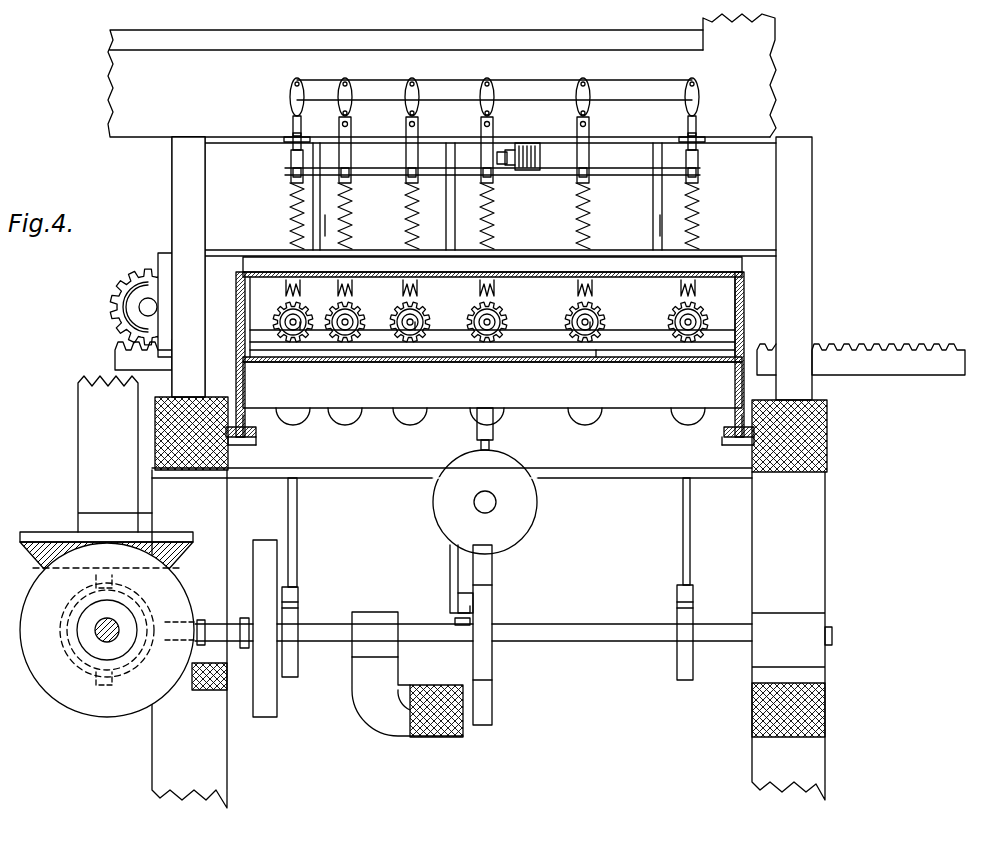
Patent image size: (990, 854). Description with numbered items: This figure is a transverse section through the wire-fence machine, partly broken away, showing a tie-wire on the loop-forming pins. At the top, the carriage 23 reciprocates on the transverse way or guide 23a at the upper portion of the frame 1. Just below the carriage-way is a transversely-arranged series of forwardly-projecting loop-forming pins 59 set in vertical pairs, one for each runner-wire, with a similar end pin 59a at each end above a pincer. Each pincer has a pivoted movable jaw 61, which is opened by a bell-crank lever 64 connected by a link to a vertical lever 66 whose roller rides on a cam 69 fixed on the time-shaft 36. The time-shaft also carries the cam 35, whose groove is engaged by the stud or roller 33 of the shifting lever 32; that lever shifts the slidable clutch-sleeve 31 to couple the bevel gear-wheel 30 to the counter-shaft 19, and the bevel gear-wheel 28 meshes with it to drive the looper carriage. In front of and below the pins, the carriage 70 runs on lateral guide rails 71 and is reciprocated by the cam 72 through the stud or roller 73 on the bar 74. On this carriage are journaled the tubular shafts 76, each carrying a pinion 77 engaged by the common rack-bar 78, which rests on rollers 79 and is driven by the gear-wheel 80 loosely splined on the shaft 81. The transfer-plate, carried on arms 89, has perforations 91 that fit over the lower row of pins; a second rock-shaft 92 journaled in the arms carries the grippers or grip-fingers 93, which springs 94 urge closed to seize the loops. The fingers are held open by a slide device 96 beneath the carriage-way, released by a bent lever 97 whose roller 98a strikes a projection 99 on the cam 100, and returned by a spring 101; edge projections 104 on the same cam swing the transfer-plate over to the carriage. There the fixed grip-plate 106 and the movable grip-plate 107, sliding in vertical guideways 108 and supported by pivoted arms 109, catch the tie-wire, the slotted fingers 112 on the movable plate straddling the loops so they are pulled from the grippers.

The frame 1 is at (196, 758).
The counter-shaft 19 is at (100, 636).
The carriage 23 is at (739, 75).
The transverse way or guide 23a is at (439, 83).
The bevel gear-wheel 28 is at (180, 540).
The bevel gear-wheel 30 is at (107, 630).
The slidable clutch-sleeve 31 is at (80, 672).
The shifting lever 32 is at (112, 686).
The stud or roller 33 is at (244, 650).
The cam 35 is at (278, 565).
The time-shaft 36 is at (568, 640).
The loop-forming pins 59 is at (410, 112).
The end pin 59a is at (710, 74).
The pivoted movable jaw 61 is at (688, 120).
The bell-crank lever 64 is at (286, 138).
The vertical lever 66 is at (298, 510).
The cam 69 is at (298, 612).
The carriage 70 is at (573, 345).
The lateral guide rails or ways 71 is at (255, 440).
The cam 72 is at (485, 502).
The stud or roller 73 is at (484, 450).
The bar 74 is at (477, 428).
The tubular shafts 76 is at (290, 335).
The pinion 77 is at (302, 335).
The rack-bar 78 is at (884, 370).
The rollers 79 is at (300, 422).
The gear-wheel 80 is at (118, 292).
The shaft 81 is at (144, 310).
The arms 89 is at (656, 222).
The perforations 91 is at (352, 114).
The rock-shaft 92 is at (380, 175).
The grippers or grip-fingers 93 is at (291, 160).
The springs 94 is at (289, 212).
The slide device 96 is at (540, 155).
The bent lever 97 is at (452, 548).
The roller 98a is at (474, 602).
The projection 99 is at (460, 630).
The cam 100 is at (492, 662).
The spring 101 is at (503, 166).
The edge projections 104 is at (492, 562).
The fixed grip-plate 106 is at (594, 352).
The movable grip-plate 107 is at (492, 305).
The vertical guideways 108 is at (262, 408).
The arms 109 is at (236, 298).
The slotted fingers 112 is at (300, 289).